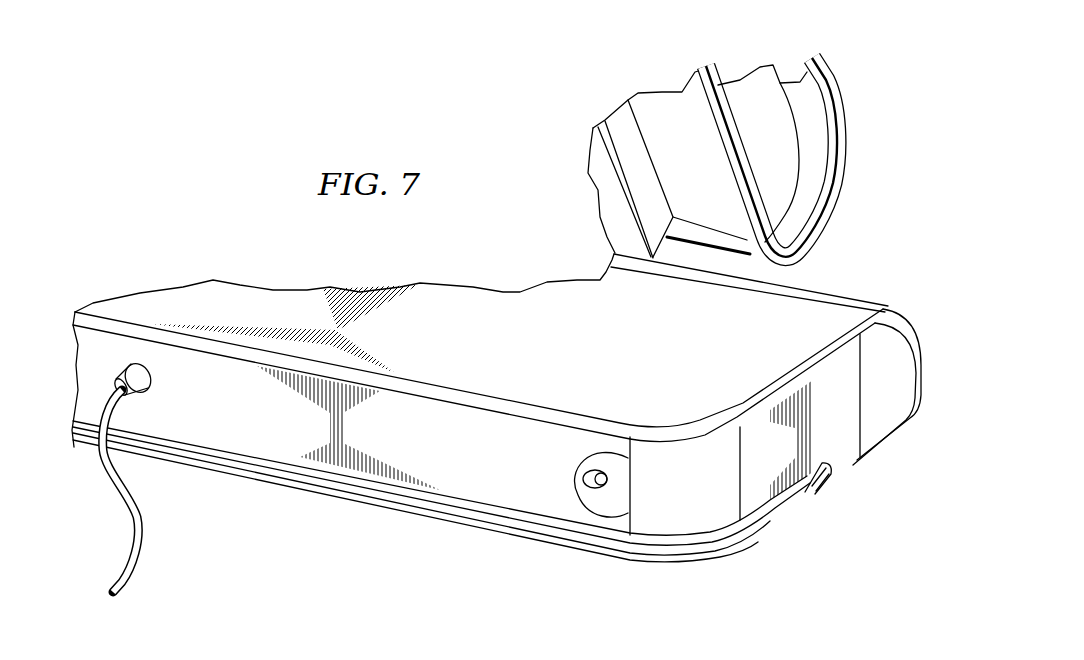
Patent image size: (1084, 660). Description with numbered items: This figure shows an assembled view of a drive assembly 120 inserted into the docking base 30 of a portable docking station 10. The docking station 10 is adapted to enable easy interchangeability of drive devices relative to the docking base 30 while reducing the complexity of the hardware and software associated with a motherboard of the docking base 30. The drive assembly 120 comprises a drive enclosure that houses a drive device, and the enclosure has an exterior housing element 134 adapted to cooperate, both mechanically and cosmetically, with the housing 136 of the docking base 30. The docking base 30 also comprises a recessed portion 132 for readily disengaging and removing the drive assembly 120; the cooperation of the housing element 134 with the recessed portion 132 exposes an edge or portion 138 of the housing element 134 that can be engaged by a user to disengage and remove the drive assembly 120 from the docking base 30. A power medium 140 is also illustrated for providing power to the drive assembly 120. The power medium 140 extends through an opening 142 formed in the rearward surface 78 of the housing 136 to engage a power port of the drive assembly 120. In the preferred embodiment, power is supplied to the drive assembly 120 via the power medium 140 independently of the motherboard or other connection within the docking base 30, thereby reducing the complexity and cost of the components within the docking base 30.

The docking station 10 is at (218, 209).
The docking base 30 is at (870, 304).
The rearward surface 78 is at (226, 436).
The drive assembly 120 is at (848, 480).
The recessed portion 132 is at (611, 498).
The exterior housing element 134 is at (710, 507).
The housing 136 is at (815, 318).
The edge or portion 138 is at (625, 462).
The power medium 140 is at (123, 533).
The opening 142 is at (150, 386).